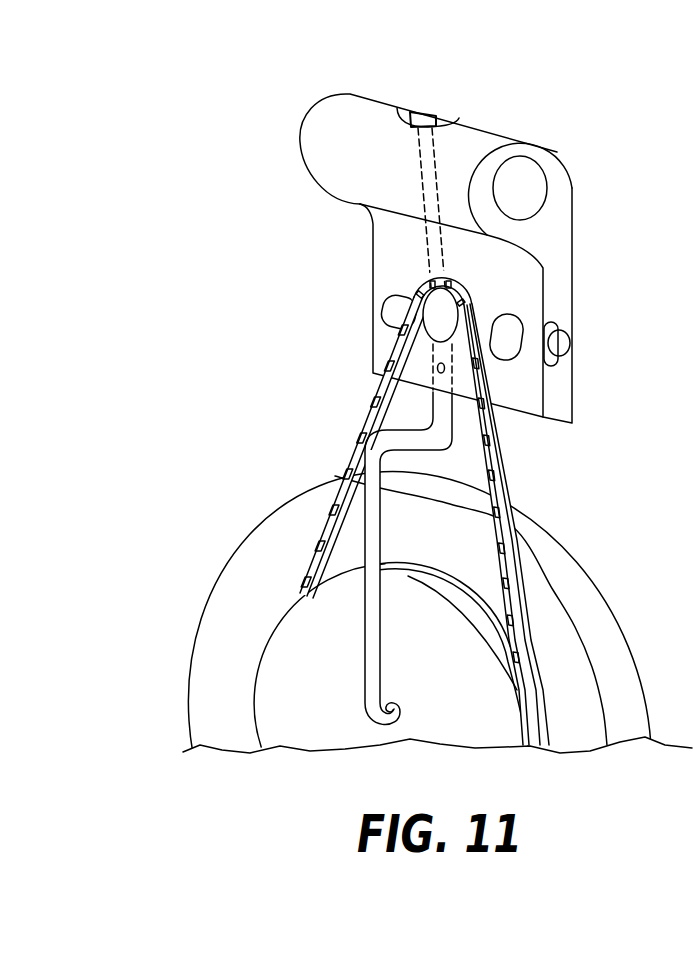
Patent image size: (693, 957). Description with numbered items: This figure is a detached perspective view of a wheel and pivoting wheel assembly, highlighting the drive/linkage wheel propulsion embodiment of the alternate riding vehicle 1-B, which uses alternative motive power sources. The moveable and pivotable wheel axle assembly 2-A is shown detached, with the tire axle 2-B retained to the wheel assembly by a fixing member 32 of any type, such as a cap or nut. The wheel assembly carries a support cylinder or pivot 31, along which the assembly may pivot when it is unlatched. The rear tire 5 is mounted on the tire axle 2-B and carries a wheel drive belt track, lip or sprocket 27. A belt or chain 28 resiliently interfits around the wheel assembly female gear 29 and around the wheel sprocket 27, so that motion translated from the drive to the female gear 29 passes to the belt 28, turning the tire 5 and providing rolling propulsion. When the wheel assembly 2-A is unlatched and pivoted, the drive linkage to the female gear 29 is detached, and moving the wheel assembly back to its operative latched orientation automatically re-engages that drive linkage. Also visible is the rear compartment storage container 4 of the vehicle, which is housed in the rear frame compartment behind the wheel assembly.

The alternate riding vehicle 1-B is at (435, 410).
The moveable and pivotable wheel axle assembly 2-A is at (477, 249).
The tire axle 2-B is at (365, 640).
The rear compartment storage container 4 is at (428, 441).
The rear tire 5 is at (598, 611).
The sprocket 27 is at (460, 591).
The belt or chain 28 is at (346, 470).
The wheel assembly female gear 29 is at (447, 313).
The pivot 31 is at (520, 178).
The fixing member 32 is at (438, 113).